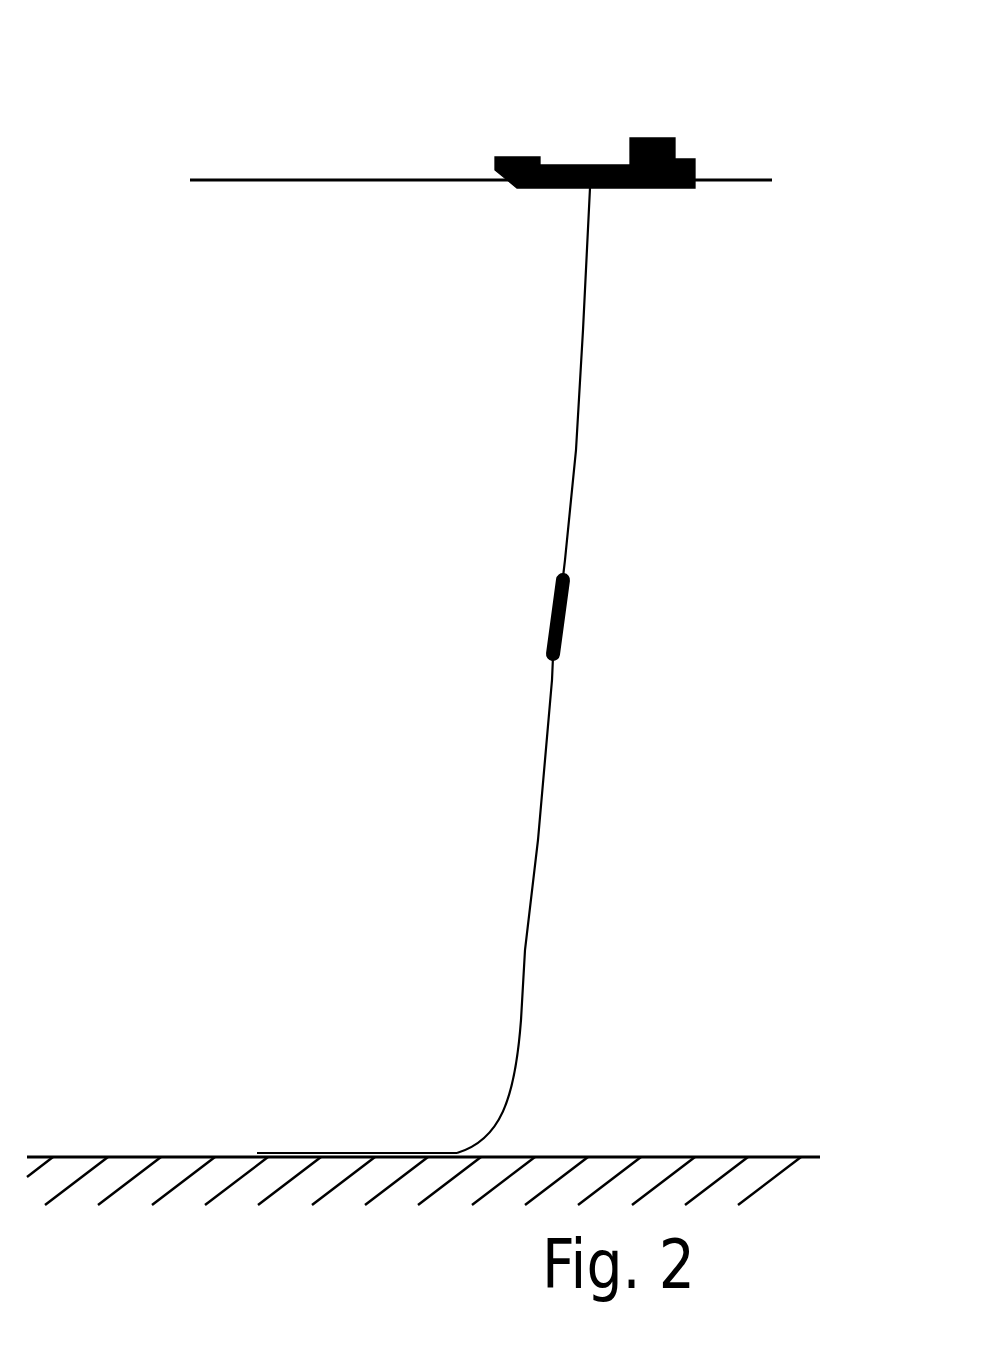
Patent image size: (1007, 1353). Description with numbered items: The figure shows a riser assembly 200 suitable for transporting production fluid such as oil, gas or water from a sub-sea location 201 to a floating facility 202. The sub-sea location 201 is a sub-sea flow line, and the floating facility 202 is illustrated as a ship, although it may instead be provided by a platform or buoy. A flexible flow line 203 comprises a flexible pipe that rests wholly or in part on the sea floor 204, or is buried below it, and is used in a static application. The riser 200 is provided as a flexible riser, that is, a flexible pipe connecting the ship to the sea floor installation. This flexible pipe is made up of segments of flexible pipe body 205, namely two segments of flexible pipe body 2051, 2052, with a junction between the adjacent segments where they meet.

The riser assembly 200 is at (549, 576).
The sub-sea location 201 is at (334, 918).
The floating facility 202 is at (653, 138).
The flexible flow line 203 is at (335, 1153).
The sea floor 204 is at (443, 1244).
The segment of flexible pipe body 205 is at (576, 670).
The first segment of flexible pipe body 2051 is at (580, 400).
The second segment of flexible pipe body 2052 is at (530, 898).